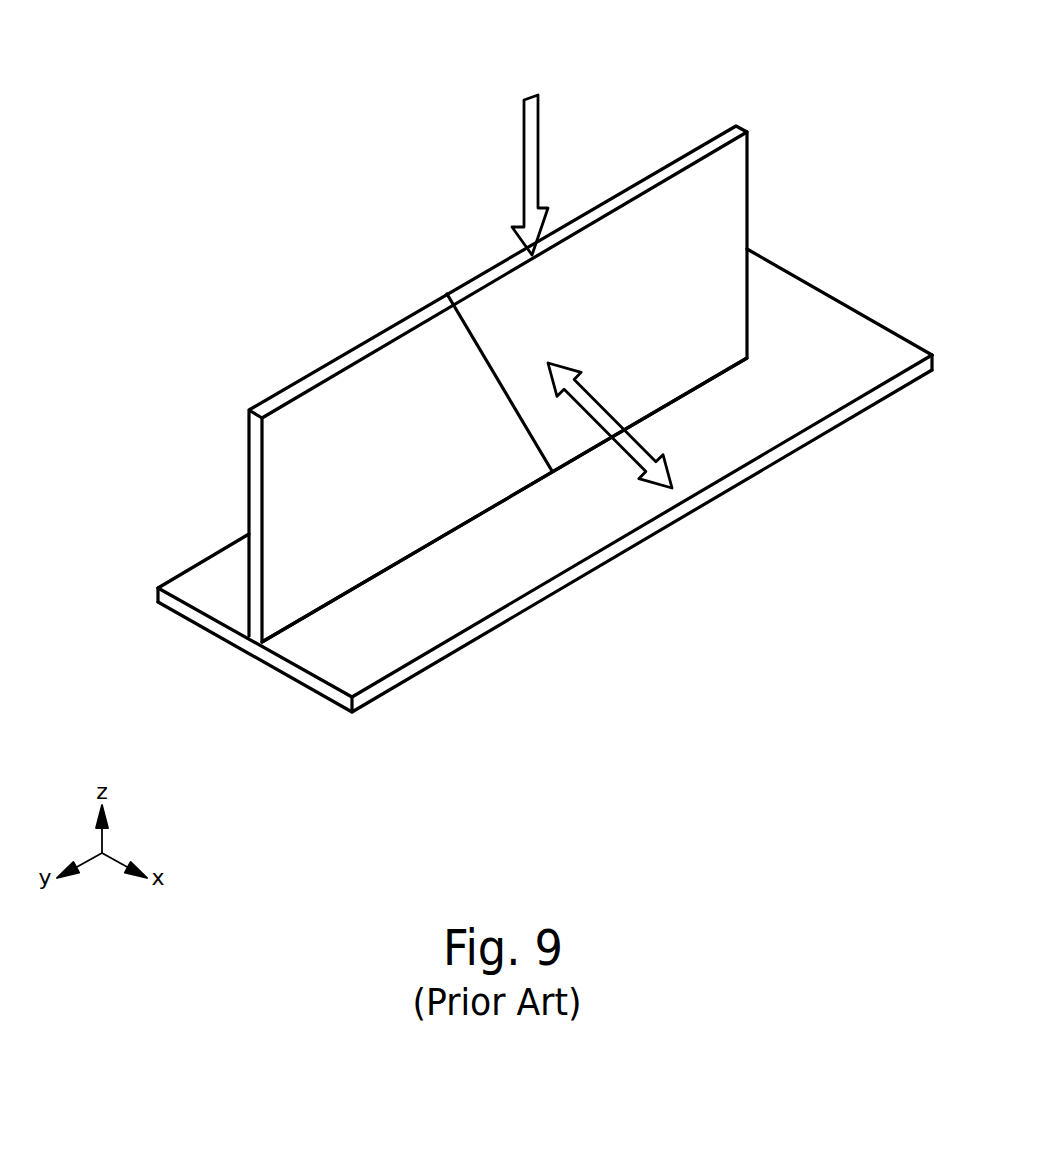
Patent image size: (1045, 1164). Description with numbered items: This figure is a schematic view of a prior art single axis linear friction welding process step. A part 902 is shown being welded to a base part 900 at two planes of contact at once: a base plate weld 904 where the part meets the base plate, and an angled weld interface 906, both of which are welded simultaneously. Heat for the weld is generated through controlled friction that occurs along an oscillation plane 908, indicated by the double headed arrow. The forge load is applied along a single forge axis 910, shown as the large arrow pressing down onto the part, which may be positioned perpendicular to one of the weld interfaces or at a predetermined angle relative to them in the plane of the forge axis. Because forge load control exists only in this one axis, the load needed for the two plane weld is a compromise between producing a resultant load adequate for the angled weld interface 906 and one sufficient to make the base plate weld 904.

The base part 900 is at (298, 563).
The part 902 is at (613, 230).
The base plate weld 904 is at (690, 395).
The angled weld interface 906 is at (488, 352).
The oscillation plane 908 is at (617, 440).
The forge axis 910 is at (530, 97).